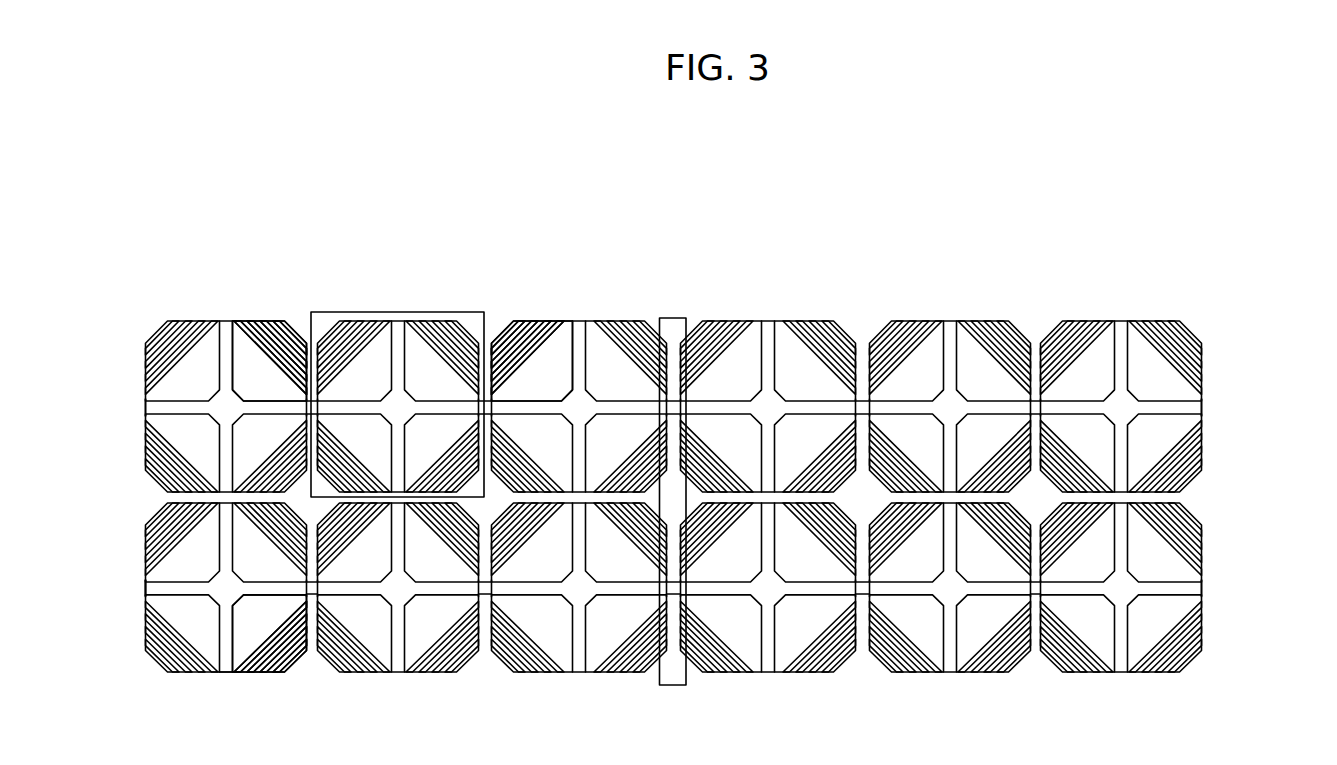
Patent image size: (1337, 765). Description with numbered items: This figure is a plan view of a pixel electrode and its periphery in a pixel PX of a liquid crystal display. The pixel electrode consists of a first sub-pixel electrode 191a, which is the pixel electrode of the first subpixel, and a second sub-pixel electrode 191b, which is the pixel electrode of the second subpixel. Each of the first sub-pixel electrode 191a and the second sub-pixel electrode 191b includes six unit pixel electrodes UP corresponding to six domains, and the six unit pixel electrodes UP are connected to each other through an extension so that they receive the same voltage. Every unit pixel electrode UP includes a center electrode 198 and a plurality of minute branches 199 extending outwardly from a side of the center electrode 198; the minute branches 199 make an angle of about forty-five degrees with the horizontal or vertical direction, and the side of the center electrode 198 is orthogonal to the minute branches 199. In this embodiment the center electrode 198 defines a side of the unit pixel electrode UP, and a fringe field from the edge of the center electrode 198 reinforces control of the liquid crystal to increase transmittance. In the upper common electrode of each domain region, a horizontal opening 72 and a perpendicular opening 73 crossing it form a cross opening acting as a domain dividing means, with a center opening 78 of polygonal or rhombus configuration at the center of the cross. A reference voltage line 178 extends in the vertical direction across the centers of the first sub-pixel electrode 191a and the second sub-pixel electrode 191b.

The horizontal opening 72 is at (272, 596).
The perpendicular opening 73 is at (232, 640).
The center opening 78 is at (217, 600).
The reference voltage line 178 is at (673, 318).
The first sub-pixel electrode 191a is at (1206, 408).
The second sub-pixel electrode 191b is at (1206, 588).
The center electrode 198 is at (247, 358).
The minute branch 199 is at (279, 326).
The pixel PX is at (1046, 299).
The unit pixel electrode UP is at (405, 312).